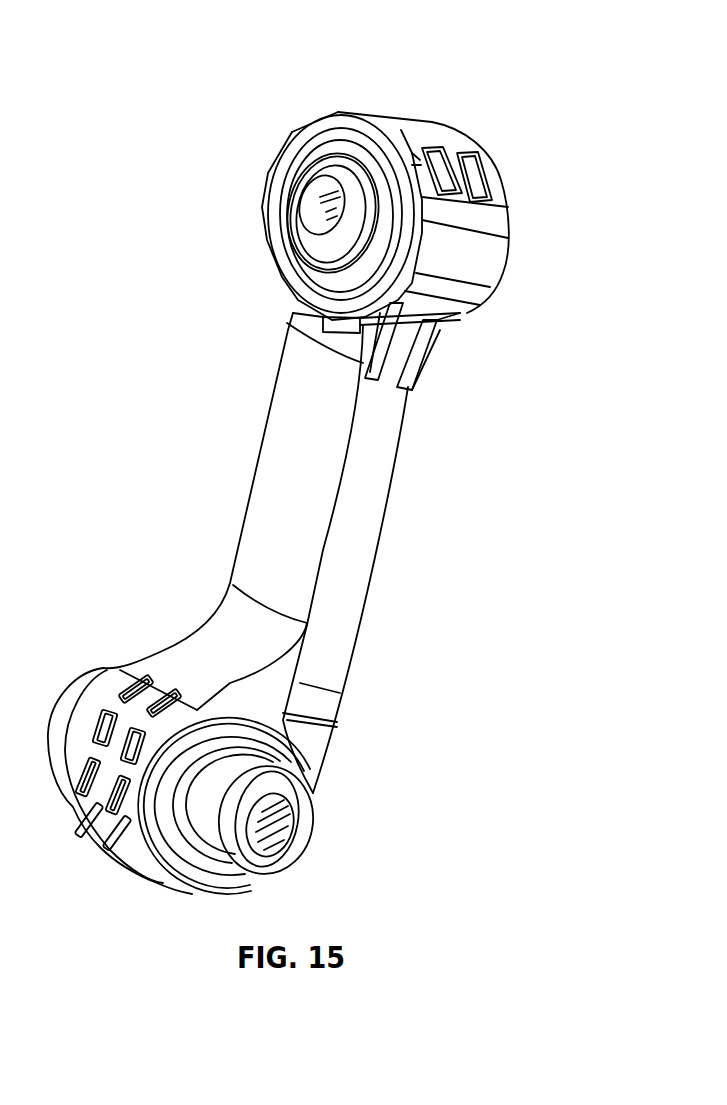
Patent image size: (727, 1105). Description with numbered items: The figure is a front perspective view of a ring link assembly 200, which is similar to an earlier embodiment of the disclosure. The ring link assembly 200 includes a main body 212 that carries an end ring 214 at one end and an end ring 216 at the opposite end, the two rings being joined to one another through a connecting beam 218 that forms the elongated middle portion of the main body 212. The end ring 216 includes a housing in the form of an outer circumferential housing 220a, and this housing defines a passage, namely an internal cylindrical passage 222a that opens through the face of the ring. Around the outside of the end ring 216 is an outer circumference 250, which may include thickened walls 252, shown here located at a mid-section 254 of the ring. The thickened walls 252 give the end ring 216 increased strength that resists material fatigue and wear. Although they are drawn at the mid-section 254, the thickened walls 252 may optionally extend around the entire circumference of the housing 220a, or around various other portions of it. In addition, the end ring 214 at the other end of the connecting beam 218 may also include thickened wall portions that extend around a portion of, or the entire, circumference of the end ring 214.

The ring link assembly 200 is at (141, 101).
The main body 212 is at (395, 527).
The end ring 214 is at (123, 860).
The end ring 216 is at (432, 123).
The connecting beam 218 is at (253, 470).
The outer circumferential housing 220a is at (383, 112).
The internal cylindrical passage 222a is at (300, 220).
The outer circumference 250 is at (495, 228).
The thickened walls 252 is at (503, 263).
The mid-section 254 is at (480, 307).